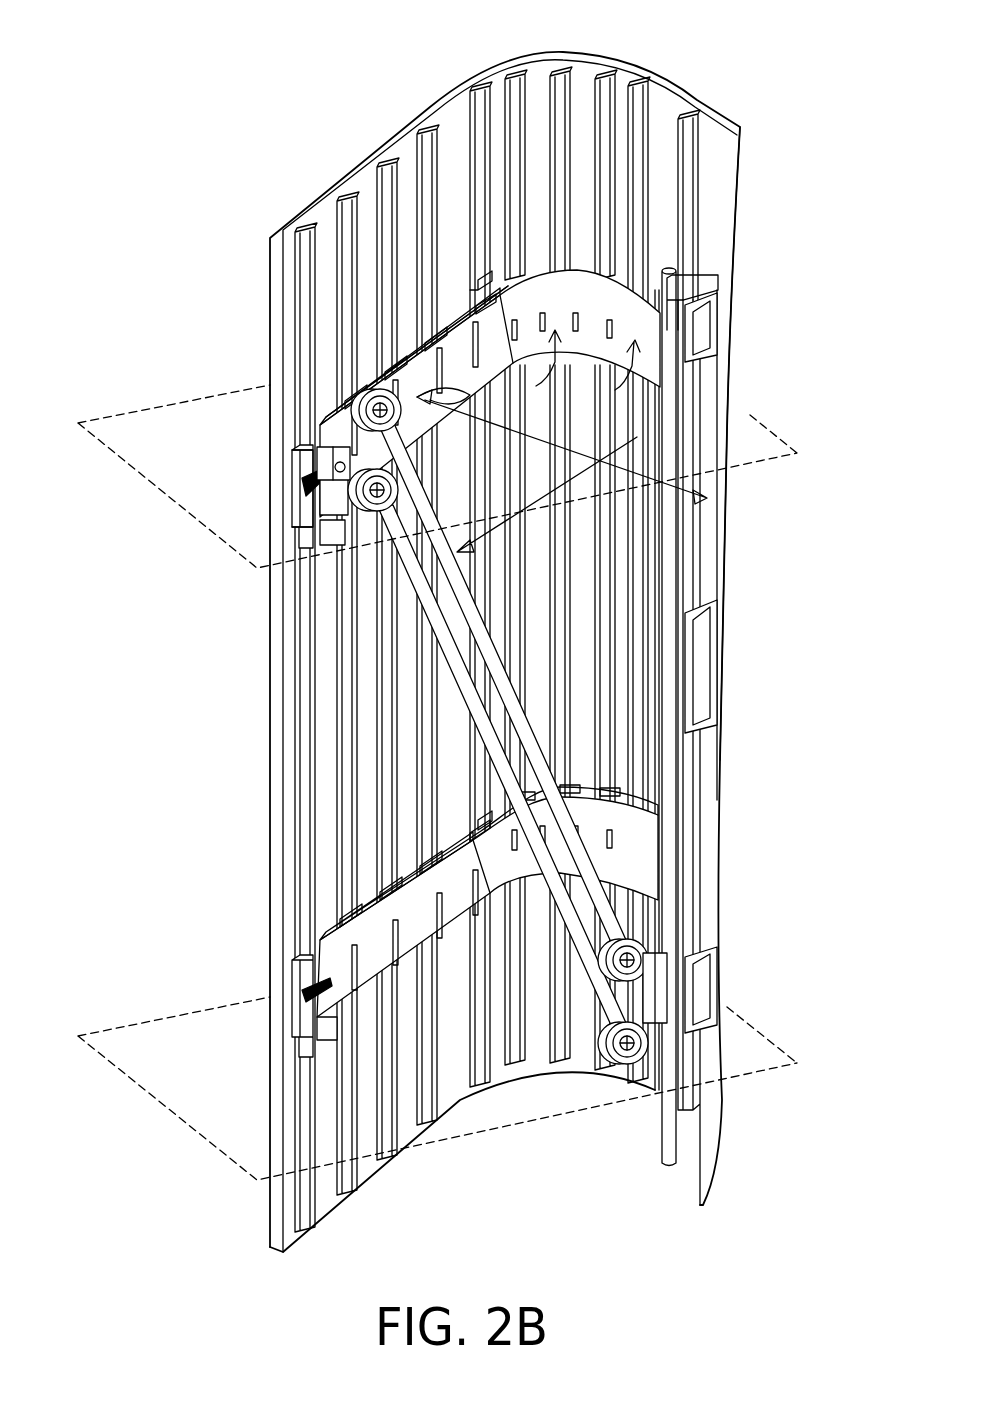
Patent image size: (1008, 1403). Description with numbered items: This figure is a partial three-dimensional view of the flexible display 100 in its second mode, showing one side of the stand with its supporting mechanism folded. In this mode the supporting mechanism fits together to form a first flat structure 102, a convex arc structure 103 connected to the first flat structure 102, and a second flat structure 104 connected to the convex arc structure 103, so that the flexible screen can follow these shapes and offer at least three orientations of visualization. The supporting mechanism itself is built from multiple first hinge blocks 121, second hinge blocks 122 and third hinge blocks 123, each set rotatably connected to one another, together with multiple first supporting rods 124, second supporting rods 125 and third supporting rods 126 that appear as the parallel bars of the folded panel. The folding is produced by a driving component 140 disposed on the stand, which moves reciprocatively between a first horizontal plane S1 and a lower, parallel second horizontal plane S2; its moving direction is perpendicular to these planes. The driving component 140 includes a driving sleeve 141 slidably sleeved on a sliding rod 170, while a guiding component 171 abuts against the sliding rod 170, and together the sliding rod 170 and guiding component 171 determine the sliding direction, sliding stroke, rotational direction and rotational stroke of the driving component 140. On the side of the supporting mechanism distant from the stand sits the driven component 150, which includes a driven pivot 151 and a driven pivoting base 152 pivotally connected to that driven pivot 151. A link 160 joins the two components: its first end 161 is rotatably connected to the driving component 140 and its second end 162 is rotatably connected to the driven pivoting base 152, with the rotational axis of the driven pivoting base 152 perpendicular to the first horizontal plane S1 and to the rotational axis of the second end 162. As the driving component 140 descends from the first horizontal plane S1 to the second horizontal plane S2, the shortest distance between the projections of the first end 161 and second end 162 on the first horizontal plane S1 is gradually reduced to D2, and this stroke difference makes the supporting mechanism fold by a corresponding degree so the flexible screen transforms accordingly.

The flexible display 100 is at (830, 1263).
The first flat structure 102 is at (738, 740).
The convex arc structure 103 is at (670, 415).
The second flat structure 104 is at (400, 363).
The first hinge blocks 121 is at (620, 310).
The second hinge blocks 122 is at (590, 303).
The third hinge blocks 123 is at (493, 298).
The first supporting rods 124 is at (645, 82).
The second supporting rods 125 is at (513, 78).
The third supporting rods 126 is at (478, 90).
The driving component 140 is at (767, 988).
The driving sleeve 141 is at (658, 997).
The driven component 150 is at (214, 468).
The driven pivot 151 is at (313, 498).
The driven pivoting base 152 is at (310, 433).
The link 160 is at (423, 786).
The first end 161 is at (622, 1063).
The second end 162 is at (400, 537).
The sliding rod 170 is at (672, 287).
The guiding component 171 is at (693, 537).
The shortest distance D2 is at (580, 527).
The first horizontal plane S1 is at (105, 448).
The second horizontal plane S2 is at (115, 1066).